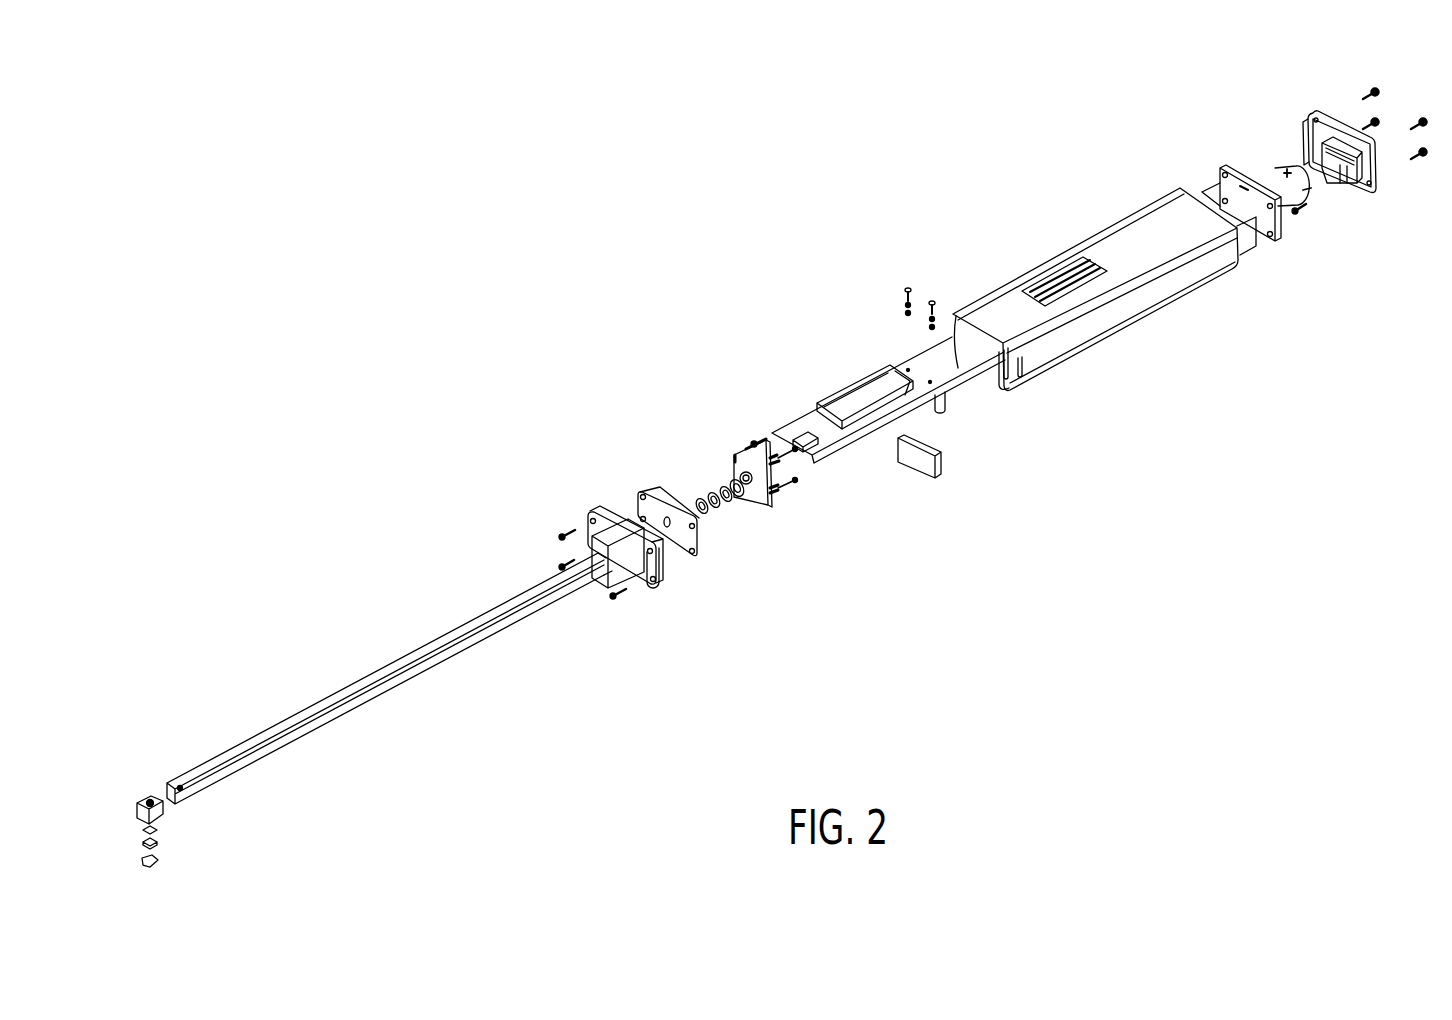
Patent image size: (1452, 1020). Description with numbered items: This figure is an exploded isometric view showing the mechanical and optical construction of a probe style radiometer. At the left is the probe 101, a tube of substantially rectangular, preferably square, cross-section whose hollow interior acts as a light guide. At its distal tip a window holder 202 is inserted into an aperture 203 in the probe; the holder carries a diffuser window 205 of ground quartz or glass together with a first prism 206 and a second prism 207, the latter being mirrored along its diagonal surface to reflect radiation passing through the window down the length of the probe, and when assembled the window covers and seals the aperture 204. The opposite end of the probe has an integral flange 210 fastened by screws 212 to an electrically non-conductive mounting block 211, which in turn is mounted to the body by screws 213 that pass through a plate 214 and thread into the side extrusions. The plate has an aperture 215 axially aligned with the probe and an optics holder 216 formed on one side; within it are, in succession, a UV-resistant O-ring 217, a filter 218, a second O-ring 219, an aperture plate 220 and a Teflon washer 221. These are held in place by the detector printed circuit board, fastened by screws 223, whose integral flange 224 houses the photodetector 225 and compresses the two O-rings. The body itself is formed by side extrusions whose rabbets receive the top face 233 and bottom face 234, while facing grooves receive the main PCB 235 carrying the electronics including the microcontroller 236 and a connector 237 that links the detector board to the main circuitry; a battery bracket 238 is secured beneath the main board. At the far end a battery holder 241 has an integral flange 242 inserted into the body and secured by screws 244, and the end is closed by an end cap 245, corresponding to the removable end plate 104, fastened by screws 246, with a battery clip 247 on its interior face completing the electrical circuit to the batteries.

The probe 101 is at (400, 740).
The end plate 104 is at (999, 157).
The window holder 202 is at (147, 803).
The aperture 203 is at (165, 790).
The aperture 204 is at (195, 782).
The diffuser window 205 is at (157, 823).
The first prism 206 is at (153, 863).
The second prism 207 is at (152, 838).
The integral flange 210 is at (596, 580).
The mounting block 211 is at (645, 578).
The screws 212 is at (614, 572).
The screws 213 is at (620, 600).
The plate 214 is at (633, 508).
The aperture 215 is at (690, 497).
The optics holder 216 is at (647, 488).
The O-ring 217 is at (698, 482).
The filter 218 is at (705, 512).
The second O-ring 219 is at (717, 505).
The aperture plate 220 is at (728, 500).
The Teflon washer 221 is at (742, 494).
The screws 223 is at (753, 442).
The integral flange 224 is at (728, 470).
The photodetector 225 is at (790, 478).
The top face 233 is at (948, 315).
The bottom face 234 is at (1010, 389).
The main PCB 235 is at (1078, 245).
The microcontroller 236 is at (868, 397).
The connector 237 is at (822, 450).
The battery bracket 238 is at (930, 466).
The battery holder 241 is at (906, 286).
The integral flange 242 is at (1283, 232).
The screws 244 is at (1296, 212).
The end cap 245 is at (1307, 138).
The screws 246 is at (1413, 160).
The battery clip 247 is at (1330, 183).